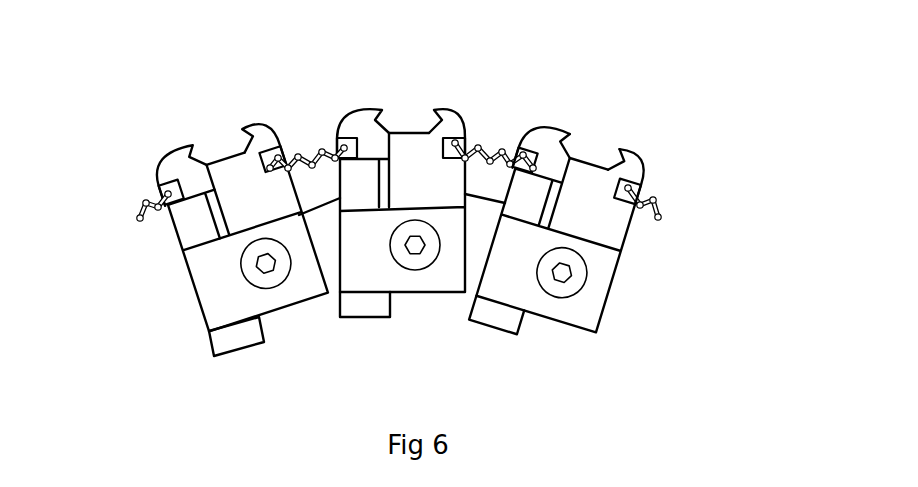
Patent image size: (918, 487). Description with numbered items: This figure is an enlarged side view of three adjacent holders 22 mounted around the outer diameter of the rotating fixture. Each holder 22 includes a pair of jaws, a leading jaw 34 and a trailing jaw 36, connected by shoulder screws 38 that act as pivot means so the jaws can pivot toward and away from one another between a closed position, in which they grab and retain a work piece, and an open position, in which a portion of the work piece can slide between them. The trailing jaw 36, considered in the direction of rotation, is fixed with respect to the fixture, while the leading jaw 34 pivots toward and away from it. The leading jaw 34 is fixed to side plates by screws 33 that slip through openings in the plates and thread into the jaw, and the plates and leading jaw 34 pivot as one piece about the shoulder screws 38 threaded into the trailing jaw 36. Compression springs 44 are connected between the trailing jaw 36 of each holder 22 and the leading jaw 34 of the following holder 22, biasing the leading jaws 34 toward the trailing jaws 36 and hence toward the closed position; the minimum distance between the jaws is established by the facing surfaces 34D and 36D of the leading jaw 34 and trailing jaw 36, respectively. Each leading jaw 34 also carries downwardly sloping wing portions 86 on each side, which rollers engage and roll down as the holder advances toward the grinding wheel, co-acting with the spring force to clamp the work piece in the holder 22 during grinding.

The holder 22 is at (143, 153).
The screws 33 is at (500, 335).
The leading jaw 34 is at (526, 146).
The facing surface 34D is at (579, 163).
The trailing jaw 36 is at (646, 168).
The facing surface 36D is at (565, 170).
The shoulder screws 38 is at (590, 283).
The compression springs 44 is at (320, 143).
The wing portions 86 is at (185, 228).